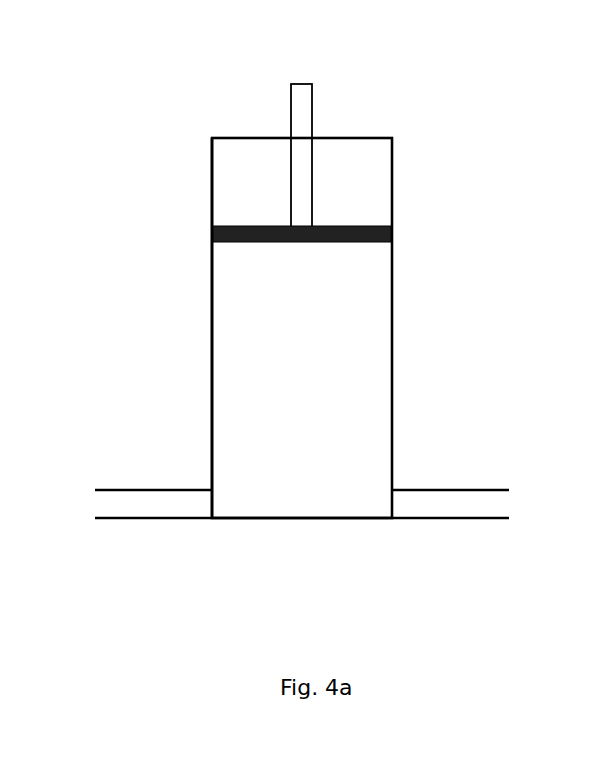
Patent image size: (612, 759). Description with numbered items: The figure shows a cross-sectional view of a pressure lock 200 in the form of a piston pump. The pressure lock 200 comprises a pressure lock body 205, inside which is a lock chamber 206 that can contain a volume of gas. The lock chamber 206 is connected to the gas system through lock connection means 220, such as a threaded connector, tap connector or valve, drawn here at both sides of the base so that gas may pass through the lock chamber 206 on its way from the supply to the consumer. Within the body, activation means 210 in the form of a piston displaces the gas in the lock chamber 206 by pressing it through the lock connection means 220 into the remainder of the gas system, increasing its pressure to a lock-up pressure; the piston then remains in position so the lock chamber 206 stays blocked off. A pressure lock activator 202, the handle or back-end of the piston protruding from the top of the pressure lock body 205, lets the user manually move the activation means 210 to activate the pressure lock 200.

The pressure lock 200 is at (372, 108).
The pressure lock activator 202 is at (300, 83).
The pressure lock body 205 is at (208, 367).
The lock chamber 206 is at (357, 377).
The activation means 210 is at (378, 227).
The lock connection means 220 is at (120, 498).